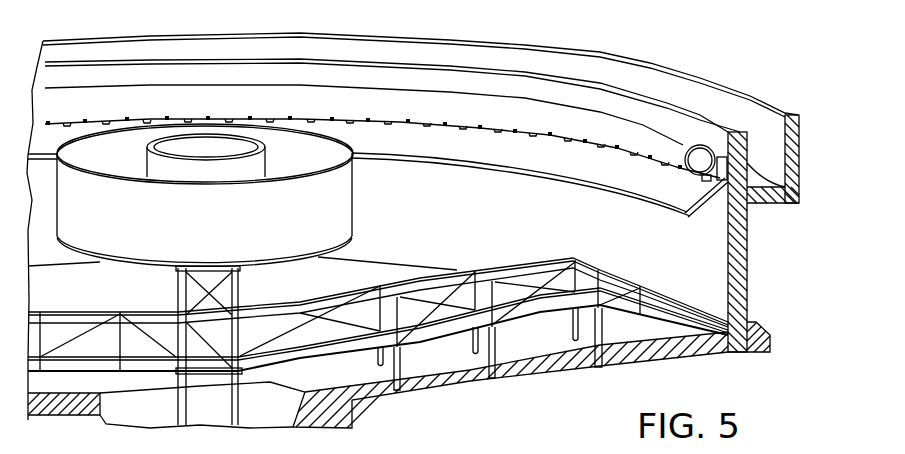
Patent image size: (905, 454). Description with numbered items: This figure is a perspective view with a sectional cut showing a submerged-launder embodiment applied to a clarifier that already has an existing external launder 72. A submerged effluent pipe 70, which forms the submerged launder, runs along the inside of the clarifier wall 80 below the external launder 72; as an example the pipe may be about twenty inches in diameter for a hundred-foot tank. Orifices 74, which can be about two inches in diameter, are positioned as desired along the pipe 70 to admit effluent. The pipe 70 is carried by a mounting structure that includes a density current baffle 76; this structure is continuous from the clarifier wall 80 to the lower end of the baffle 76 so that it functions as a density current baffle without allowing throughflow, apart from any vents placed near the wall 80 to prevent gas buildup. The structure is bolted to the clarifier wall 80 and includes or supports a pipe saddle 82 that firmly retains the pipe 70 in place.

The submerged effluent pipe 70 is at (644, 130).
The external launder 72 is at (801, 150).
The orifices 74 is at (617, 147).
The density current baffle 76 is at (672, 213).
The clarifier wall 80 is at (748, 268).
The pipe saddle 82 is at (710, 183).